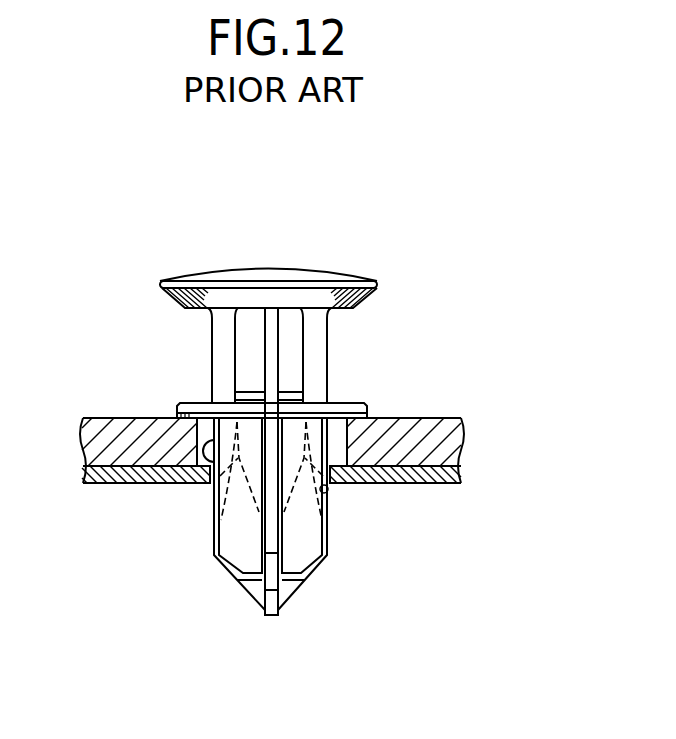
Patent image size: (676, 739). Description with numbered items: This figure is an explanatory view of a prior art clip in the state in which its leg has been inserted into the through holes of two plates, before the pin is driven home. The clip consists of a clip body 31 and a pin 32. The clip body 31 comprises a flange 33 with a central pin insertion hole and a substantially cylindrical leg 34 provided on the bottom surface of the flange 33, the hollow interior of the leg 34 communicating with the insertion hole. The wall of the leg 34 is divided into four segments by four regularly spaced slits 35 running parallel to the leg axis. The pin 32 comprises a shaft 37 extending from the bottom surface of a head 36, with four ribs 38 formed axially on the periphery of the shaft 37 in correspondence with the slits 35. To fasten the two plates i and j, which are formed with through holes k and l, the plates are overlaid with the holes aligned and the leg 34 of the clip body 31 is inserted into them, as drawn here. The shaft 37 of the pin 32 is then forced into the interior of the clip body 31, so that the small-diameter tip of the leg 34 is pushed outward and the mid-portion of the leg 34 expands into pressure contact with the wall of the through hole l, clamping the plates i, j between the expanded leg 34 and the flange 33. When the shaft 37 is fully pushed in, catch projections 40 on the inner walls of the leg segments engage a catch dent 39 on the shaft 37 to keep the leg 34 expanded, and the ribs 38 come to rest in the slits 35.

The clip body 31 is at (398, 401).
The pin 32 is at (370, 251).
The flange 33 is at (193, 401).
The leg 34 is at (307, 520).
The slit 35 is at (258, 538).
The head 36 is at (220, 281).
The shaft 37 is at (297, 340).
The rib 38 is at (218, 338).
The catch dent 39 is at (210, 523).
The catch projection 40 is at (330, 558).
The plate i is at (105, 430).
The plate j is at (103, 483).
The through hole k is at (187, 490).
The through hole l is at (330, 499).